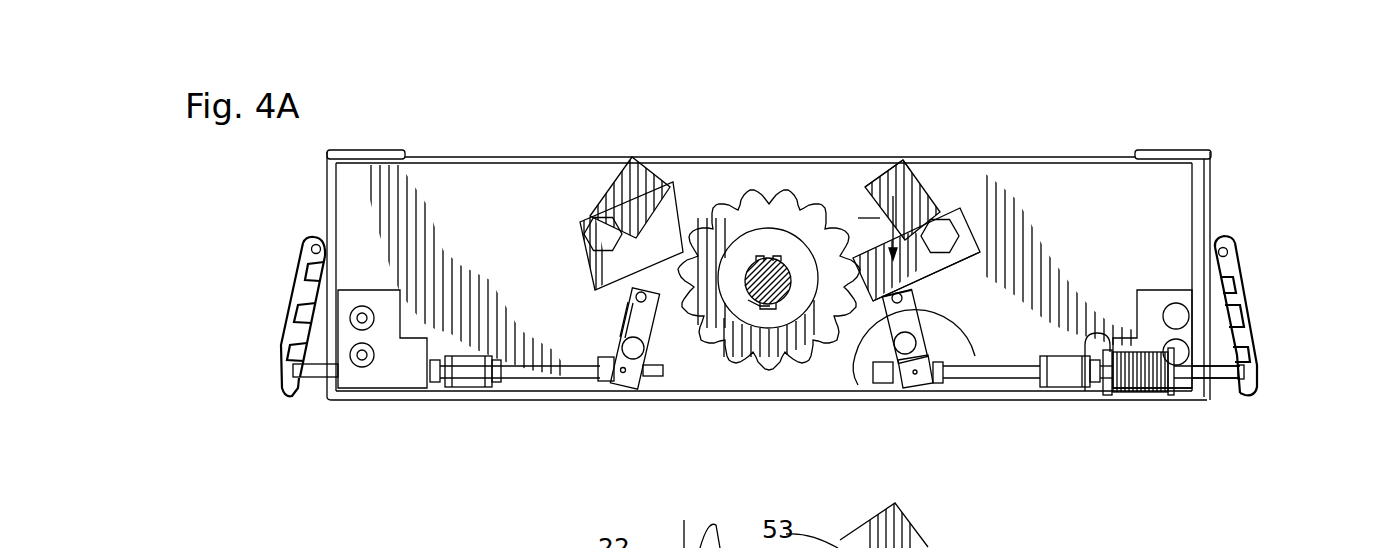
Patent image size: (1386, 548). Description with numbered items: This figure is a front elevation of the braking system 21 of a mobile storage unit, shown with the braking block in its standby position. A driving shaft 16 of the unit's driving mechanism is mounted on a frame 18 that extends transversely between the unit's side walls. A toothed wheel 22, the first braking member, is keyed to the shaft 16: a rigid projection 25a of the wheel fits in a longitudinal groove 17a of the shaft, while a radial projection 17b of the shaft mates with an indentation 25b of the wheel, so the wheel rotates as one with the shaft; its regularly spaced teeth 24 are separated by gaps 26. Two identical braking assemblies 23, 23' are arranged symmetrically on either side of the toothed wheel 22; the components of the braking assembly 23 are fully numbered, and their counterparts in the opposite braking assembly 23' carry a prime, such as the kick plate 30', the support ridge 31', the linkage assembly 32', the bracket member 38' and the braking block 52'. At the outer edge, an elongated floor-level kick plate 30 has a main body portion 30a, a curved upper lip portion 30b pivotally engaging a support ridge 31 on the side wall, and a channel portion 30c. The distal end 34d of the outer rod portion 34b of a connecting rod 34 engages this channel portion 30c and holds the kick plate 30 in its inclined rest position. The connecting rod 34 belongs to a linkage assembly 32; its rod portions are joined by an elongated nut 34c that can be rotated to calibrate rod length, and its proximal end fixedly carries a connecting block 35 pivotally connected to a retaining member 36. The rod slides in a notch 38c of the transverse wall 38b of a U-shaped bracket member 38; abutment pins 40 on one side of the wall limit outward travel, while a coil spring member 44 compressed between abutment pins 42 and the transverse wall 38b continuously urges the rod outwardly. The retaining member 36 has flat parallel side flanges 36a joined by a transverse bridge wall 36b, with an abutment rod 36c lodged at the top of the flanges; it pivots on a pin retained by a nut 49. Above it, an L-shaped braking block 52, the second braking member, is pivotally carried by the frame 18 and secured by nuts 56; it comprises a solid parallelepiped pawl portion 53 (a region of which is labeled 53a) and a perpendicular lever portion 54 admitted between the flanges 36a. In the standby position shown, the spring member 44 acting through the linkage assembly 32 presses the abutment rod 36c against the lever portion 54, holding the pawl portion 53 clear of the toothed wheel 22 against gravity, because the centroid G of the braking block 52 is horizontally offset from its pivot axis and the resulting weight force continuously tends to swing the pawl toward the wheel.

The shaft 16 is at (793, 240).
The longitudinal groove 17a is at (790, 262).
The rigid projection 17b is at (762, 220).
The frame 18 is at (498, 185).
The braking system 21 is at (688, 172).
The toothed wheel 22 is at (778, 222).
The braking assembly 23 is at (1067, 230).
The braking assembly 23' is at (460, 241).
The teeth 24 is at (718, 215).
The rigid projection 25a is at (786, 228).
The indentation 25b is at (745, 325).
The gap 26 is at (730, 332).
The kick plate 30 is at (1276, 291).
The main body portion 30a is at (1245, 303).
The curved upper lip portion 30b is at (1215, 245).
The channel portion 30c is at (1250, 372).
The kick plate 30' is at (247, 319).
The support ridge 31 is at (1271, 260).
The support ridge 31' is at (251, 232).
The linkage assembly 32 is at (991, 405).
The linkage assembly 32' is at (446, 426).
The connecting rod 34 is at (1025, 380).
The outer rod portion 34b is at (1218, 380).
The elongated nut 34c is at (1067, 382).
The distal end 34d is at (1250, 410).
The connecting block 35 is at (925, 375).
The retaining member 36 is at (880, 330).
The side flanges 36a is at (942, 365).
The transverse bridge wall 36b is at (955, 365).
The abutment rod 36c is at (875, 320).
The bracket member 38 is at (1170, 240).
The transverse wall 38b is at (1130, 392).
The notch 38c is at (1102, 388).
The bracket member 38' is at (389, 390).
The abutment pins 40 is at (1092, 394).
The abutment pins 42 is at (1175, 388).
The coil spring member 44 is at (1140, 390).
The nut 49 is at (902, 378).
The braking block 52 is at (965, 181).
The braking block 52' is at (602, 176).
The pawl portion 53 is at (947, 186).
The block edge 53a is at (866, 187).
The lever portion 54 is at (927, 263).
The nuts 56 is at (955, 220).
The centroid G is at (919, 173).